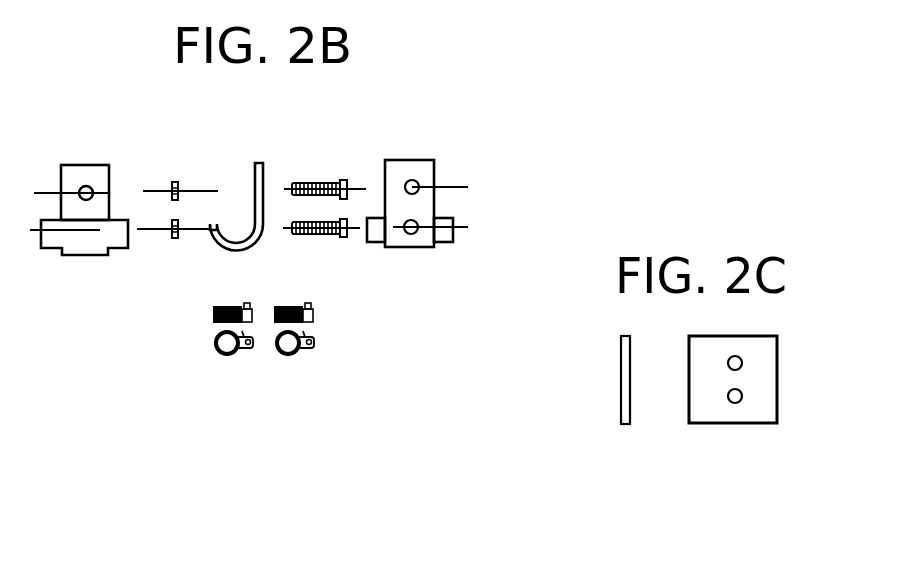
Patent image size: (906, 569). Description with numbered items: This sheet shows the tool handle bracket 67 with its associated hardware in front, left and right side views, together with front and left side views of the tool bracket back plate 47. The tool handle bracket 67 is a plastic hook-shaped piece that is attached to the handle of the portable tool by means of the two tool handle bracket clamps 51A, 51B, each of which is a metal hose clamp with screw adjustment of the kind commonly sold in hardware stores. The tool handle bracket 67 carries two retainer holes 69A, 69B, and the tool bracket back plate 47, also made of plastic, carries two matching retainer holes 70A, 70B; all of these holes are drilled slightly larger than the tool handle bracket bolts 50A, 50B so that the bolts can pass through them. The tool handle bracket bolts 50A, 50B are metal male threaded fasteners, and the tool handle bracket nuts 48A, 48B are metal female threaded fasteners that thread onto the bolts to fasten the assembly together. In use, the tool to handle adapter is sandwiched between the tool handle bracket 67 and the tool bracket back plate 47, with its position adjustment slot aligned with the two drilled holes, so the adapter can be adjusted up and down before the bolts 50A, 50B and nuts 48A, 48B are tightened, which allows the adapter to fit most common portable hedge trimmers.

In FIG. 2C, the tool bracket back plate 47 is at (617, 392).
In FIG. 2B, the tool handle bracket nut 48A is at (172, 238).
In FIG. 2B, the tool handle bracket nut 48B is at (172, 182).
In FIG. 2B, the tool handle bracket bolt 50A is at (318, 233).
In FIG. 2B, the tool handle bracket bolt 50B is at (343, 178).
In FIG. 2B, the tool handle bracket clamp 51A is at (218, 358).
In FIG. 2B, the tool handle bracket clamp 51B is at (302, 357).
In FIG. 2B, the tool handle bracket 67 is at (267, 165).
In FIG. 2B, the retainer hole 69A is at (415, 185).
In FIG. 2B, the retainer hole 69B is at (420, 219).
In FIG. 2C, the retainer hole 70A is at (728, 373).
In FIG. 2C, the retainer hole 70B is at (735, 403).